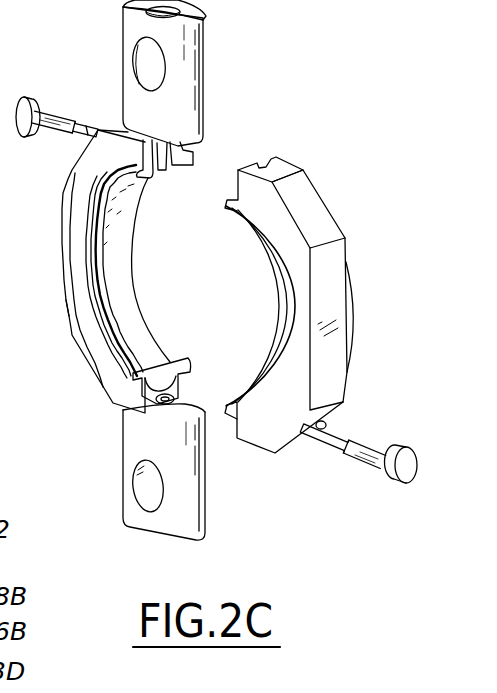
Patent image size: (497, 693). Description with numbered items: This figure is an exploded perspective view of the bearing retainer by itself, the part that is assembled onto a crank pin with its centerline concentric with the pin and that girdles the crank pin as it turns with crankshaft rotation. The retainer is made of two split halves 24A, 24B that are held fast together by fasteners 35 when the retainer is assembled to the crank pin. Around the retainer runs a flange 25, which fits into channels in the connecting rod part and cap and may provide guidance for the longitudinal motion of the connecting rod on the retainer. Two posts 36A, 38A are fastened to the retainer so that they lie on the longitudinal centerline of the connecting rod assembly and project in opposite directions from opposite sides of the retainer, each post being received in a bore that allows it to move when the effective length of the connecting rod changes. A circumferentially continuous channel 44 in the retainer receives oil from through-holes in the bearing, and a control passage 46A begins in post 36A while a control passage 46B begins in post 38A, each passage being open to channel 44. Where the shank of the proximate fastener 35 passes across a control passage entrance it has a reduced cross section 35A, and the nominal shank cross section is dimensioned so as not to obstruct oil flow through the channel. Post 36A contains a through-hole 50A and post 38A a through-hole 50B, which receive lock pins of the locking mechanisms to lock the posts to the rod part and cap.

The split half 24A is at (63, 190).
The split half 24B is at (342, 240).
The flange 25 is at (108, 377).
The fastener 35 is at (30, 100).
The reduced cross section 35A is at (97, 132).
The post 36A is at (205, 70).
The post 38A is at (205, 499).
The circumferentially continuous channel 44 is at (158, 378).
The control passage 46A is at (163, 160).
The control passage 46B is at (170, 402).
The through-hole 50A is at (145, 60).
The through-hole 50B is at (140, 472).